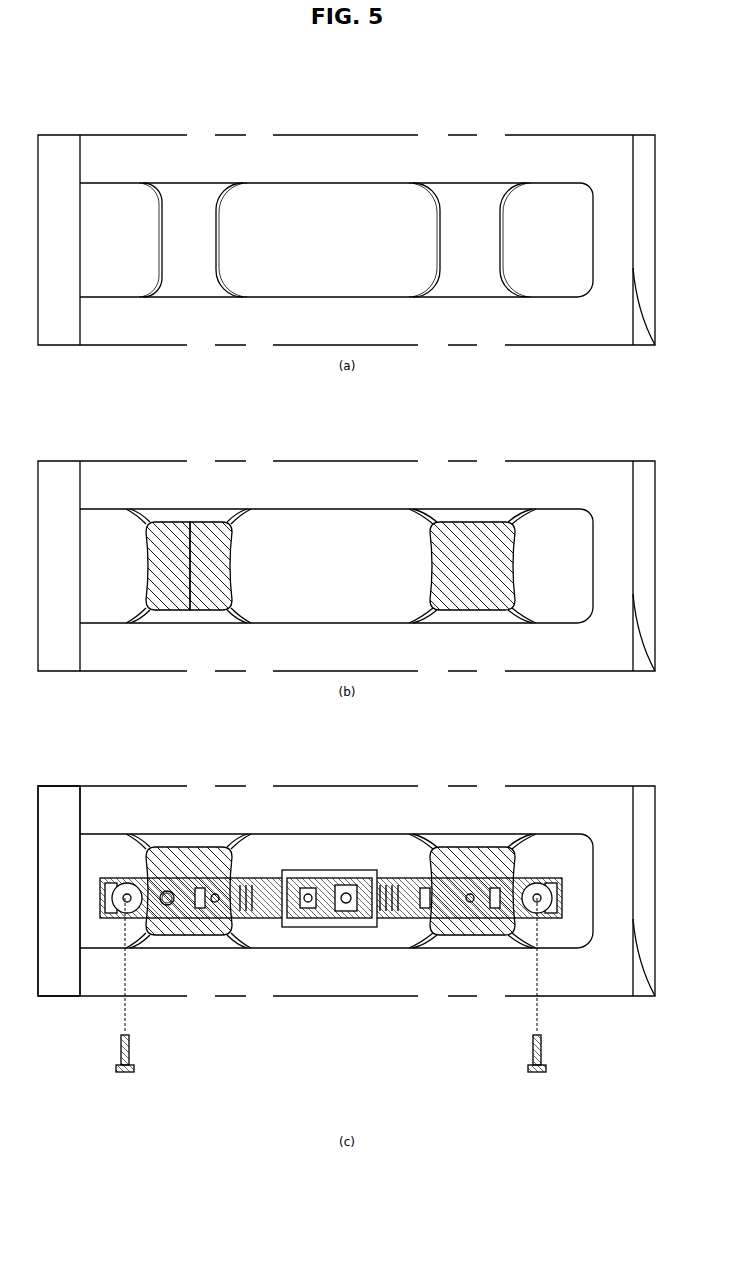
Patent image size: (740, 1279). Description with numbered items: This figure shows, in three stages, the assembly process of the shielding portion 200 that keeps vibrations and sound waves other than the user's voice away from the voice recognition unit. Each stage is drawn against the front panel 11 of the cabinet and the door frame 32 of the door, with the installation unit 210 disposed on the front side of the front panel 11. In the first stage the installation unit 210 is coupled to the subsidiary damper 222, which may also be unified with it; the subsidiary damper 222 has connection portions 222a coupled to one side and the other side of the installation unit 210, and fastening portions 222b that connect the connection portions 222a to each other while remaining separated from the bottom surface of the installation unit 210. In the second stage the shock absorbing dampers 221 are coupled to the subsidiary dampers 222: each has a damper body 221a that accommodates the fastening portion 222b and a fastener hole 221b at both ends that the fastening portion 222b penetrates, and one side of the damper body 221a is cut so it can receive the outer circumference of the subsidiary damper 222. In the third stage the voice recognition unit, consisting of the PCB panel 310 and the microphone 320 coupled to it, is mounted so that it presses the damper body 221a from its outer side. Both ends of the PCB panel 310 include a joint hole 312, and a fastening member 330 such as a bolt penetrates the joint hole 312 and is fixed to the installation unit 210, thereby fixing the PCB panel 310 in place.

The front panel 11 is at (60, 799).
The door frame 32 is at (403, 152).
The shielding portion 200 is at (577, 856).
The installation unit 210 is at (557, 205).
The shock absorbing damper 221 is at (447, 523).
The damper body 221a is at (177, 525).
The fastener hole 221b is at (220, 525).
The subsidiary damper 222 is at (486, 183).
The connection portion 222a is at (143, 190).
The fastening portion 222b is at (192, 205).
The PCB panel 310 is at (396, 914).
The joint hole 312 is at (124, 882).
The microphone 320 is at (160, 848).
The fastening member 330 is at (125, 1074).